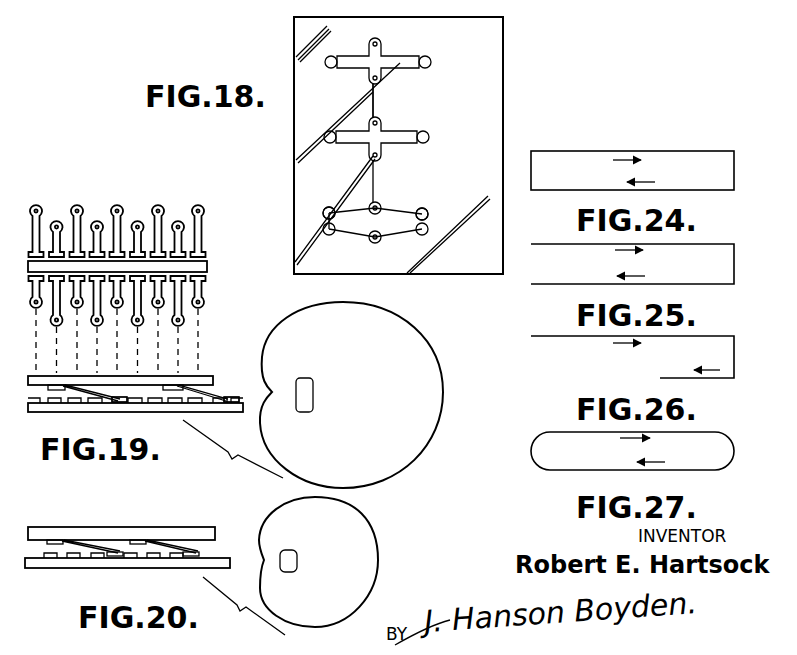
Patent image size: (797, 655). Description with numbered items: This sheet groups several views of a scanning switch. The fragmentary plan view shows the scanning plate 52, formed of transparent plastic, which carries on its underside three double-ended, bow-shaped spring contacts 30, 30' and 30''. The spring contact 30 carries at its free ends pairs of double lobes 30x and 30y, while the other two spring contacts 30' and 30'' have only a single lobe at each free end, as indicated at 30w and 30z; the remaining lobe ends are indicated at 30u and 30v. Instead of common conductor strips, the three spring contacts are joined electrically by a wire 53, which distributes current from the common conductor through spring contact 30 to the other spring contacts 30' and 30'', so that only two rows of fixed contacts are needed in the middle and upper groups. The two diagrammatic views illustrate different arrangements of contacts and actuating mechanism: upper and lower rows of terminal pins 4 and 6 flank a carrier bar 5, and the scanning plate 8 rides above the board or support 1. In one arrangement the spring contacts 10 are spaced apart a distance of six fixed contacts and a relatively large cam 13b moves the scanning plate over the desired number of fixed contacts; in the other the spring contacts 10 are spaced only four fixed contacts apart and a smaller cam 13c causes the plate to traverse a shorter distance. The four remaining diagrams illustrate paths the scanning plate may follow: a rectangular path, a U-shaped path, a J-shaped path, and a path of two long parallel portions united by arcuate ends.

In FIG. 18, the scanning plate 52 is at (503, 110).
In FIG. 18, the wire 53 is at (372, 165).
In FIG. 18, the spring contact 30 is at (375, 213).
In FIG. 18, the contact element end 30u is at (350, 49).
In FIG. 18, the spring contact 30'' is at (386, 60).
In FIG. 18, the single lobe 30z is at (431, 62).
In FIG. 18, the contact element end 30v is at (330, 131).
In FIG. 18, the spring contact 30' is at (379, 134).
In FIG. 18, the single lobe 30w is at (430, 138).
In FIG. 18, the double lobes 30x is at (333, 200).
In FIG. 18, the double lobes 30y is at (427, 211).
In FIG. 19, the upper row of terminal pins 4 is at (206, 254).
In FIG. 19, the carrier bar 5 is at (207, 267).
In FIG. 19, the lower row of terminal pins 6 is at (206, 288).
In FIG. 19, the scanning plate 8 is at (193, 380).
In FIG. 20, the scanning plate 8 is at (113, 537).
In FIG. 19, the board or support 1 is at (146, 407).
In FIG. 20, the board or support 1 is at (50, 563).
In FIG. 19, the spring contacts 10 is at (80, 404).
In FIG. 20, the spring contacts 10 is at (97, 553).
In FIG. 19, the cam 13b is at (436, 405).
In FIG. 20, the cam 13c is at (367, 540).